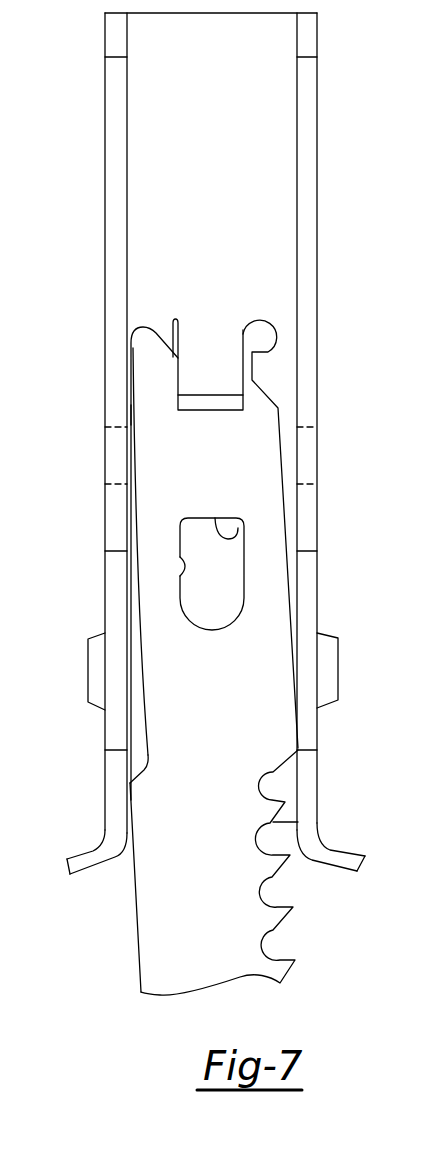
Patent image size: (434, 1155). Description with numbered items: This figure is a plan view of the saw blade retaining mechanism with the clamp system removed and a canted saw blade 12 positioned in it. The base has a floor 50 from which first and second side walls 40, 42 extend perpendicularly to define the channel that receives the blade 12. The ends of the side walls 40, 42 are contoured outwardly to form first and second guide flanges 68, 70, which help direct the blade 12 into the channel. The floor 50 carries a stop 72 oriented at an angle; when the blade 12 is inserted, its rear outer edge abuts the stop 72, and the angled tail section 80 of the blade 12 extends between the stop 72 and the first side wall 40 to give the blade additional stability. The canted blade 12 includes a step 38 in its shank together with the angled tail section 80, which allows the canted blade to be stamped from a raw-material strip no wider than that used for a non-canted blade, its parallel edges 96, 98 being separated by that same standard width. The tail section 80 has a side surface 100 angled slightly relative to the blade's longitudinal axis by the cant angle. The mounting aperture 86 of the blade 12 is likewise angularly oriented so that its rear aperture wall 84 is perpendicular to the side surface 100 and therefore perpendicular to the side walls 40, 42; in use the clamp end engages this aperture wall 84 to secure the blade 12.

The saw blade 12 is at (150, 966).
The step 38 is at (145, 771).
The first side wall 40 is at (115, 163).
The second side wall 42 is at (310, 150).
The floor 50 is at (188, 163).
The first guide flange 68 is at (68, 860).
The second guide flange 70 is at (358, 865).
The stop 72 is at (212, 363).
The tail section 80 is at (153, 365).
The aperture wall 84 is at (237, 538).
The mounting aperture 86 is at (186, 570).
The parallel edge 96 is at (139, 907).
The parallel edge 98 is at (294, 611).
The side surface 100 is at (132, 413).